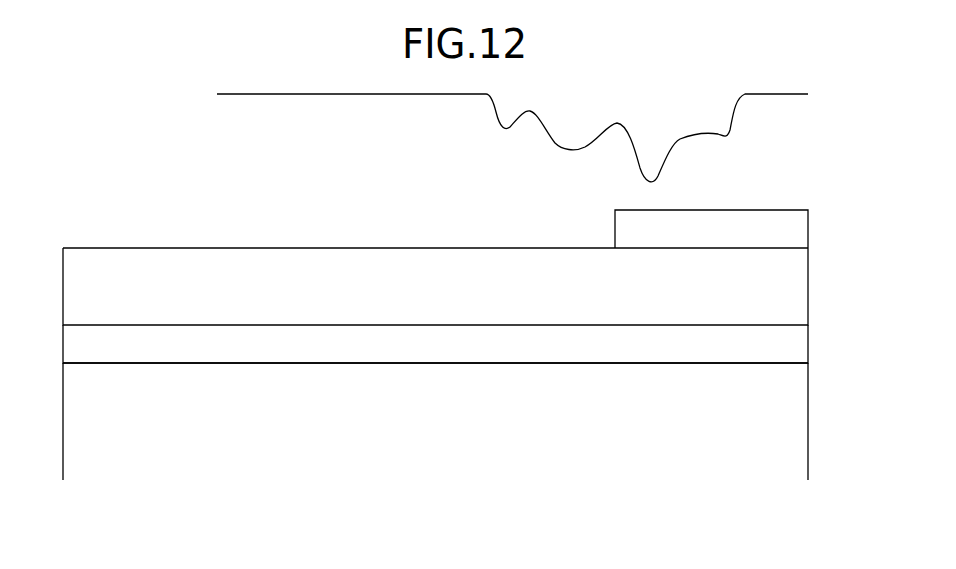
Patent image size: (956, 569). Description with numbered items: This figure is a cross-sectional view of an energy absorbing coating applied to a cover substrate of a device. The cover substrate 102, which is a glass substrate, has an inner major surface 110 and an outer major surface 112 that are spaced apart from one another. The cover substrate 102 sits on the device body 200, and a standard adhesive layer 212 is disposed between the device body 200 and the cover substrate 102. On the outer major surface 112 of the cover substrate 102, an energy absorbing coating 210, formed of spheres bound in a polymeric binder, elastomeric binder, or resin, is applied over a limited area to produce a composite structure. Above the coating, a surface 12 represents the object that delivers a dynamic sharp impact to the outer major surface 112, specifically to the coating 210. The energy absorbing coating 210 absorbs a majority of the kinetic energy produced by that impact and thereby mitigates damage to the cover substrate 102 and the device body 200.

The surface 12 is at (675, 166).
The cover substrate 102 is at (247, 258).
The inner major surface 110 is at (382, 325).
The outer major surface 112 is at (400, 248).
The device body 200 is at (808, 417).
The energy absorbing coating 210 is at (612, 223).
The adhesive layer 212 is at (588, 352).